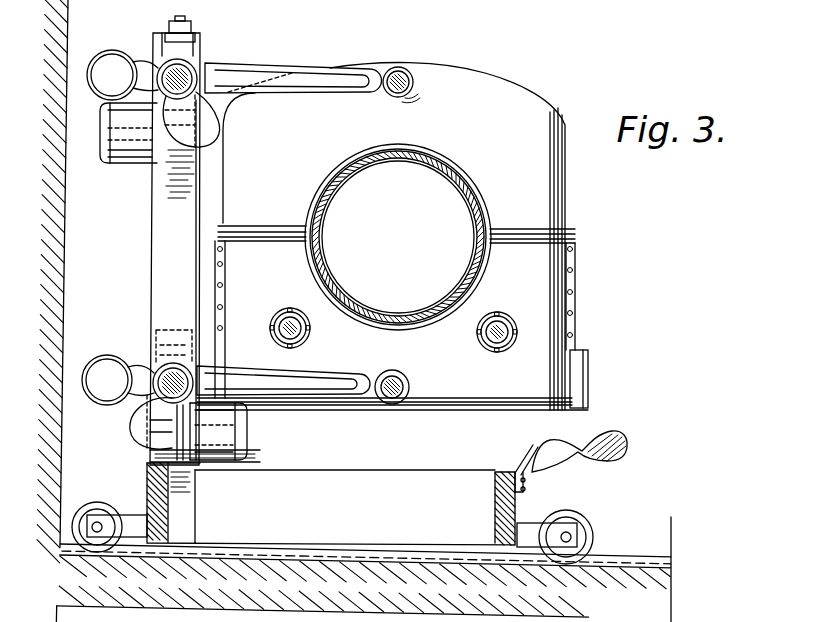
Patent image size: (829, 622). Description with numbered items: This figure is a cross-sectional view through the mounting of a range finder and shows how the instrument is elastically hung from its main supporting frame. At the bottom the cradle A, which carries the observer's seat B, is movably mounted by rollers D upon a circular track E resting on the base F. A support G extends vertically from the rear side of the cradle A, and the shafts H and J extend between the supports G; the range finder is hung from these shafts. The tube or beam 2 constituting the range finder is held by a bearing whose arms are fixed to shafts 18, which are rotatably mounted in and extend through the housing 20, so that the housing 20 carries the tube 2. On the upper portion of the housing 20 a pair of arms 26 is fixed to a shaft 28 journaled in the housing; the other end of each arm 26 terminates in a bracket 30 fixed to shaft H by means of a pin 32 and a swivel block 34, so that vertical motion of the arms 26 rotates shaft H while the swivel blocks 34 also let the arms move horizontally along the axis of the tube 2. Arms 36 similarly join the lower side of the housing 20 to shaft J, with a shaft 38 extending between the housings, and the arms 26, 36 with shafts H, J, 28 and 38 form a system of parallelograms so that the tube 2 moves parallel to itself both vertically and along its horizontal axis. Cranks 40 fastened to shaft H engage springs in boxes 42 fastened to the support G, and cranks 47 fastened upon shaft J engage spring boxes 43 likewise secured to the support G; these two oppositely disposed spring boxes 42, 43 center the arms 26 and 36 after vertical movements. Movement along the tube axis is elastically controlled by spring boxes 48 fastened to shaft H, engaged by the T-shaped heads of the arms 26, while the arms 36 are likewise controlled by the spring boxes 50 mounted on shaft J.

The tube or beam 2 is at (450, 184).
The shafts 18 is at (291, 318).
The housing 20 is at (542, 194).
The arms 26 is at (282, 69).
The shaft 28 is at (410, 74).
The bracket 30 is at (154, 42).
The pin 32 is at (178, 22).
The swivel block 34 is at (188, 43).
The arms 36 is at (317, 383).
The shaft 38 is at (393, 405).
The cranks 40 is at (222, 131).
The spring boxes 42 is at (128, 145).
The spring boxes 43 is at (212, 436).
The cranks 47 is at (137, 417).
The spring boxes 48 is at (108, 63).
The spring boxes 50 is at (100, 361).
The shaft H is at (193, 70).
The shaft J is at (150, 362).
The supports G is at (158, 262).
The cradle A is at (424, 478).
The observer's seat B is at (622, 439).
The rollers D is at (92, 508).
The circular track E is at (601, 562).
The base F is at (656, 582).